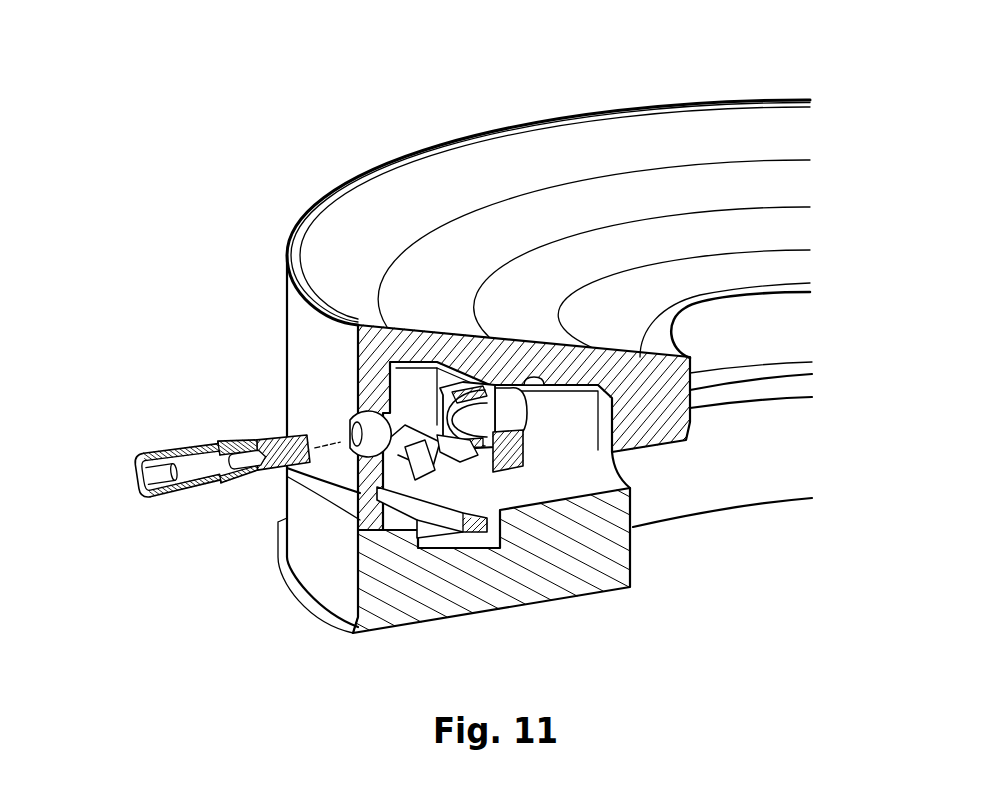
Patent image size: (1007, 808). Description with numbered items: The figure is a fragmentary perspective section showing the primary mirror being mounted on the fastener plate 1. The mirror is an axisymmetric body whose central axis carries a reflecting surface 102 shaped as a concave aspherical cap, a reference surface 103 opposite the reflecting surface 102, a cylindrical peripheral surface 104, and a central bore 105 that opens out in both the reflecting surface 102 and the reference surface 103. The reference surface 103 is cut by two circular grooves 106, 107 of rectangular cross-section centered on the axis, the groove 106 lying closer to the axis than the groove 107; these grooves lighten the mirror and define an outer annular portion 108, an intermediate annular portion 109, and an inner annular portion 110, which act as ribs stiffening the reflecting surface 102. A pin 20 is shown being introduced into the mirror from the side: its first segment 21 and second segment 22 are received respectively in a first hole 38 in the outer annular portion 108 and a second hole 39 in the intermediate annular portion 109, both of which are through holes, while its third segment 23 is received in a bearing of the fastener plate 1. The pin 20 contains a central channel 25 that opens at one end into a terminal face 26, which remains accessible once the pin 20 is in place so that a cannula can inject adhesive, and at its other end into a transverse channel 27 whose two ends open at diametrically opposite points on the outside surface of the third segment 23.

The fastener plate 1 is at (287, 507).
The pin 20 is at (197, 468).
The first segment 21 is at (170, 456).
The second segment 22 is at (280, 440).
The third segment 23 is at (246, 444).
The central channel 25 is at (133, 482).
The terminal face 26 is at (134, 462).
The transverse channel 27 is at (248, 470).
The first hole 38 is at (372, 462).
The second hole 39 is at (540, 427).
The reflecting surface 102 is at (707, 127).
The reference surface 103 is at (644, 449).
The peripheral surface 104 is at (276, 288).
The central bore 105 is at (812, 334).
The groove 106 is at (547, 385).
The groove 107 is at (423, 385).
The outer annular portion 108 is at (352, 490).
The intermediate annular portion 109 is at (512, 462).
The inner annular portion 110 is at (692, 425).